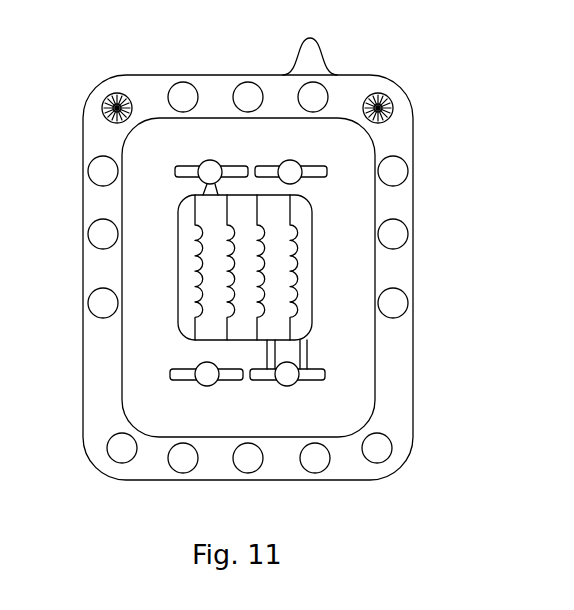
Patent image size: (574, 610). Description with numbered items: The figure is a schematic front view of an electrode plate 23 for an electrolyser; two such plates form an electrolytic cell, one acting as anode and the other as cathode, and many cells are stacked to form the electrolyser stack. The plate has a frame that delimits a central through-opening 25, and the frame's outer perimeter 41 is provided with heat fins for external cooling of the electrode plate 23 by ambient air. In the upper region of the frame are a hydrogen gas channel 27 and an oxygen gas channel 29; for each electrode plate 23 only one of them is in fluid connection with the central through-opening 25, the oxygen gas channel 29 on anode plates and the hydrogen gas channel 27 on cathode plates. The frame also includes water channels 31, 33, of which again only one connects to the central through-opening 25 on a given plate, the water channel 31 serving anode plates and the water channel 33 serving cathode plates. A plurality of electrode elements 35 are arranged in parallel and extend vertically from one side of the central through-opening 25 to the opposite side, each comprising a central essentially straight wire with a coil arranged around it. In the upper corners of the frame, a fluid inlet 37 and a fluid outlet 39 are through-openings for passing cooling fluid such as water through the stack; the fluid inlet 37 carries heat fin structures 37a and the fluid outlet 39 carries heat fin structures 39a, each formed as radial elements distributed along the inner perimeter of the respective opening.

The electrode plate 23 is at (106, 31).
The outer perimeter 41 is at (234, 75).
The fluid inlet 37 is at (132, 95).
The heat fin structures 37a is at (102, 104).
The fluid outlet 39 is at (368, 96).
The heat fin structures 39a is at (393, 102).
The oxygen gas channel 29 is at (175, 167).
The hydrogen gas channel 27 is at (327, 172).
The central through-opening 25 is at (247, 267).
The electrode elements 35 is at (312, 268).
The water channel 33 is at (200, 384).
The water channel 31 is at (300, 385).